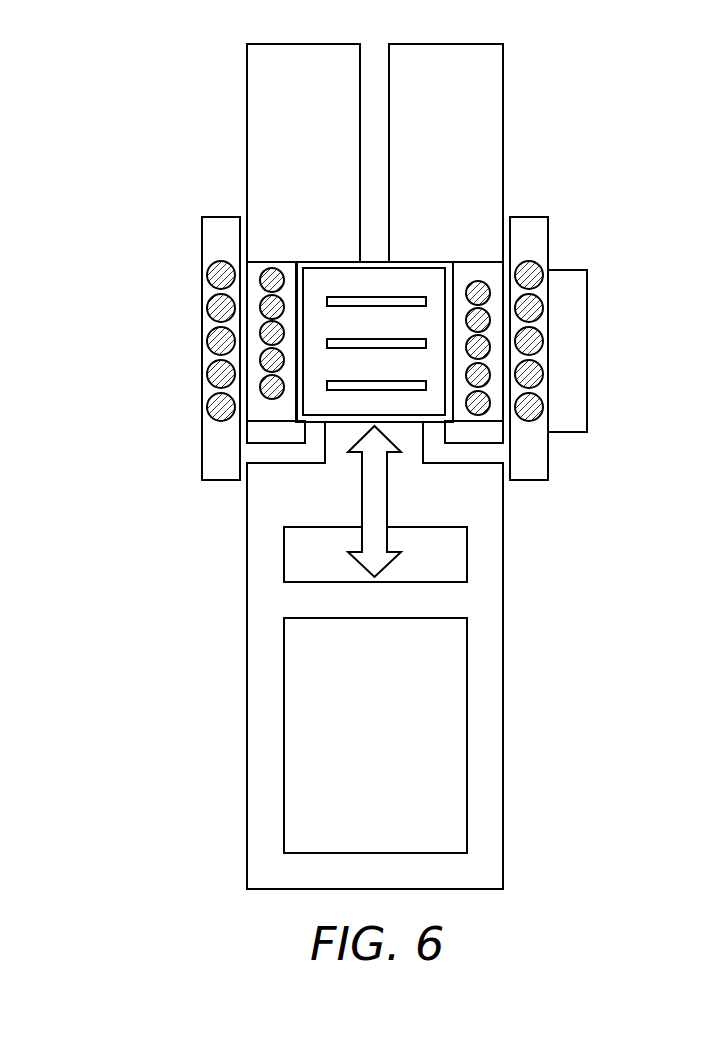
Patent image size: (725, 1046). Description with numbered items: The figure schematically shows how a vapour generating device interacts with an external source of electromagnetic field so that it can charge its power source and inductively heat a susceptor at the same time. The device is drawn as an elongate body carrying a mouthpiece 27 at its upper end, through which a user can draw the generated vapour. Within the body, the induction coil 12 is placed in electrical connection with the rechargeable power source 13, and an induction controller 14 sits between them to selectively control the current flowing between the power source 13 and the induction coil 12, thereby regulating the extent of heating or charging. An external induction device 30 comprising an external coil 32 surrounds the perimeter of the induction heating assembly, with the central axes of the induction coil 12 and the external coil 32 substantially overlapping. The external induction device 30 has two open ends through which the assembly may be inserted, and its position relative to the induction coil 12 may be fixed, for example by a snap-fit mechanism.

The mouthpiece 27 is at (247, 48).
The external coil 32 is at (207, 408).
The induction coil 12 is at (263, 356).
The external induction device 30 is at (587, 273).
The induction controller 14 is at (467, 537).
The rechargeable power source 13 is at (467, 628).